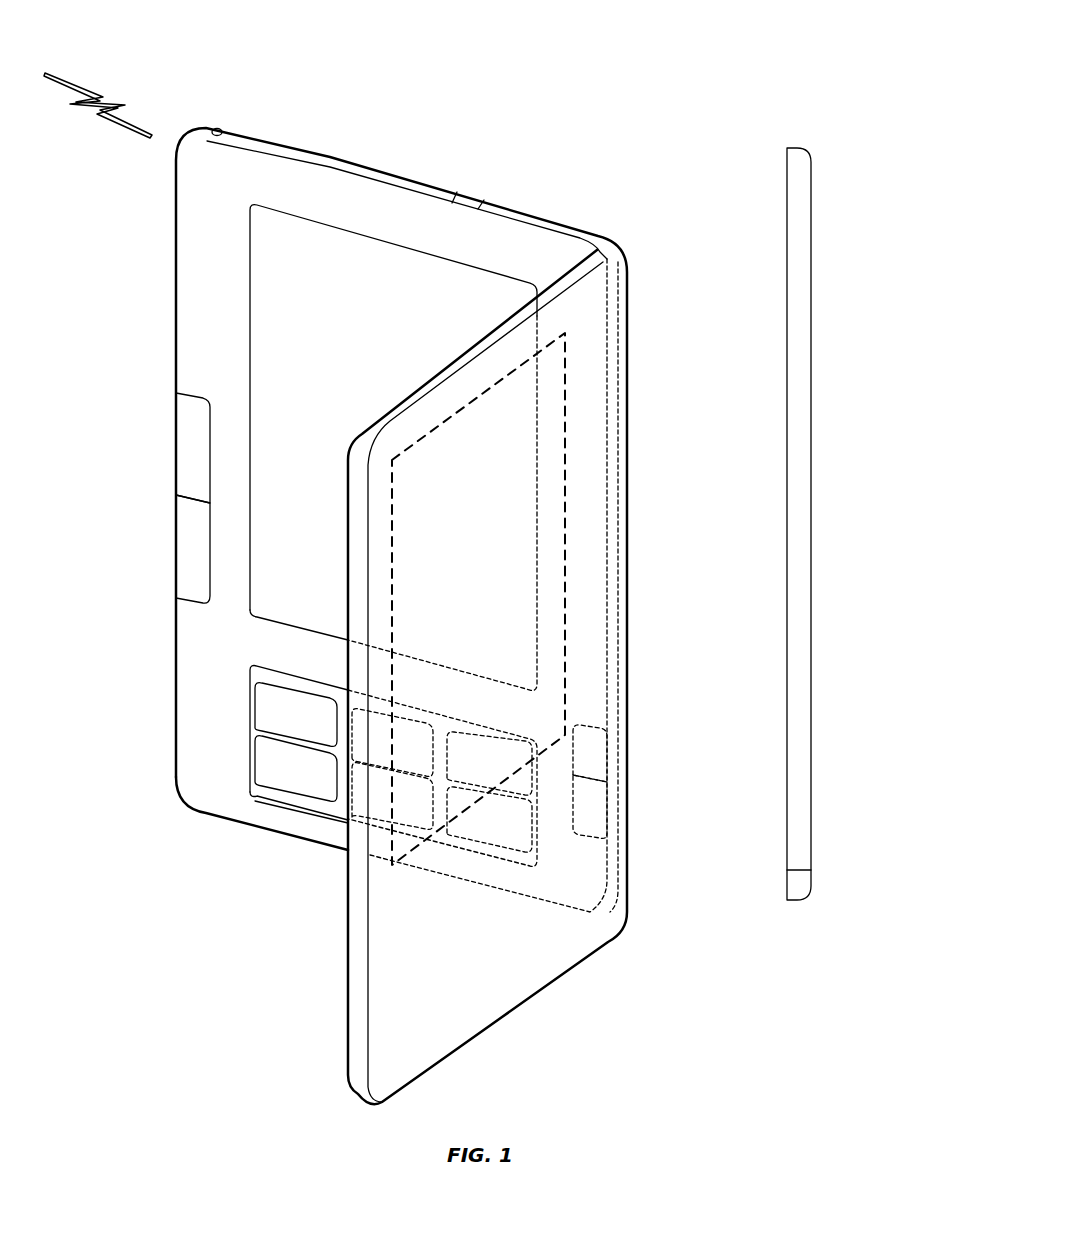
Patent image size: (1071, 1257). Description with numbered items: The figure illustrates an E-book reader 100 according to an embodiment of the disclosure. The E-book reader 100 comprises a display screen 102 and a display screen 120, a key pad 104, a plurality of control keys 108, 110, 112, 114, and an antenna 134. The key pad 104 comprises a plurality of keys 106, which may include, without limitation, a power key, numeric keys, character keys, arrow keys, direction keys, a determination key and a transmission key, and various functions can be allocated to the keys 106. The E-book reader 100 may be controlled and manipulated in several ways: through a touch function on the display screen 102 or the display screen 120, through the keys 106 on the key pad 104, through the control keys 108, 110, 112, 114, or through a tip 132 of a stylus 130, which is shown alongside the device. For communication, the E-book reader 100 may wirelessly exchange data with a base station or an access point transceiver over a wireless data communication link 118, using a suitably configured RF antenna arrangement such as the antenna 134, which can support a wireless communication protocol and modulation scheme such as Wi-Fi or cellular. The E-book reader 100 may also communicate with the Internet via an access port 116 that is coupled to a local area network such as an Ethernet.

The E-book reader 100 is at (733, 48).
The display screen 102 is at (265, 330).
The key pad 104 is at (267, 802).
The keys 106 is at (267, 762).
The control key 108 is at (176, 443).
The control key 110 is at (176, 552).
The control key 112 is at (593, 752).
The control key 114 is at (593, 807).
The access port 116 is at (468, 198).
The wireless data communication link 118 is at (87, 110).
The display screen 120 is at (568, 548).
The stylus 130 is at (813, 640).
The tip 132 is at (811, 890).
The antenna 134 is at (213, 128).